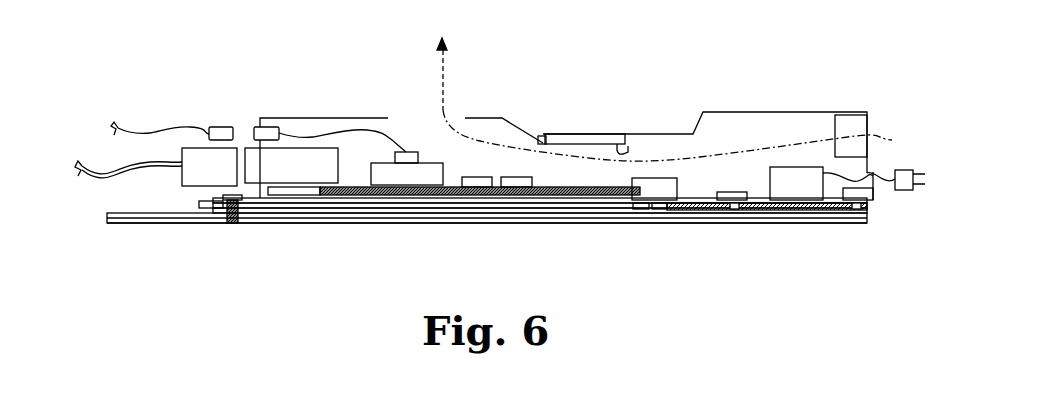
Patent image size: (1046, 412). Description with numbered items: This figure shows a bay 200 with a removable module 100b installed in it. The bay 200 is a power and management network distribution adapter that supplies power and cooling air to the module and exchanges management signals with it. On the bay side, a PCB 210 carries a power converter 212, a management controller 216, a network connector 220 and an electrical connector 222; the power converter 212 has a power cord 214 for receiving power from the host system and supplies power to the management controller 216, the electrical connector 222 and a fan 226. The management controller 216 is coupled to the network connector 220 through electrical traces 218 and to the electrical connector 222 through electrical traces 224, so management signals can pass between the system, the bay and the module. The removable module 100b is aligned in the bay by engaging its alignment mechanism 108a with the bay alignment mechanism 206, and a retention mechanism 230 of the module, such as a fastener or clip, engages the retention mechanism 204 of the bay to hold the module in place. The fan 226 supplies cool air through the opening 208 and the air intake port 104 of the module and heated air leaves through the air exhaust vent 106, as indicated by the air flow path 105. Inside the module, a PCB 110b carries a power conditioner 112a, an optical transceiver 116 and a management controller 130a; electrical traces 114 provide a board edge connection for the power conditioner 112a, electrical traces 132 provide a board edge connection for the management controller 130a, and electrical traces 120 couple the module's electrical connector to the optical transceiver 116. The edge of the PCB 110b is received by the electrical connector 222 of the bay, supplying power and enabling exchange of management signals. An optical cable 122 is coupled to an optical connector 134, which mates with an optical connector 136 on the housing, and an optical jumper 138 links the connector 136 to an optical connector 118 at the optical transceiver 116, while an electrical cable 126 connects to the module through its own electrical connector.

The removable module 100b is at (325, 104).
The air intake port 104 is at (619, 140).
The air flow path 105 is at (652, 178).
The air exhaust vent 106 is at (435, 120).
The alignment mechanism 108a is at (443, 218).
The printed circuit board 110b is at (295, 203).
The power conditioner 112a is at (510, 177).
The electrical traces 114 is at (565, 134).
The optical transceiver 116 is at (432, 163).
The optical connector 118 is at (408, 152).
The electrical traces 120 is at (355, 208).
The optical cable 122 is at (150, 130).
The electrical cable 126 is at (93, 160).
The management controller 130a is at (470, 177).
The electrical traces 132 is at (545, 210).
The optical connector 134 is at (222, 127).
The optical connector 136 is at (267, 127).
The optical jumper 138 is at (367, 128).
The bay 200 is at (776, 98).
The removable module retention mechanism 204 is at (241, 222).
The alignment mechanism 206 is at (400, 213).
The opening 208 is at (541, 136).
The PCB 210 is at (820, 218).
The power converter 212 is at (798, 167).
The power cord 214 is at (906, 170).
The management controller 216 is at (733, 192).
The electrical traces 218 is at (793, 218).
The network connector 220 is at (875, 192).
The electrical connector 222 is at (668, 178).
The electrical traces 224 is at (695, 213).
The fan 226 is at (864, 127).
The retention mechanism 230 is at (224, 222).